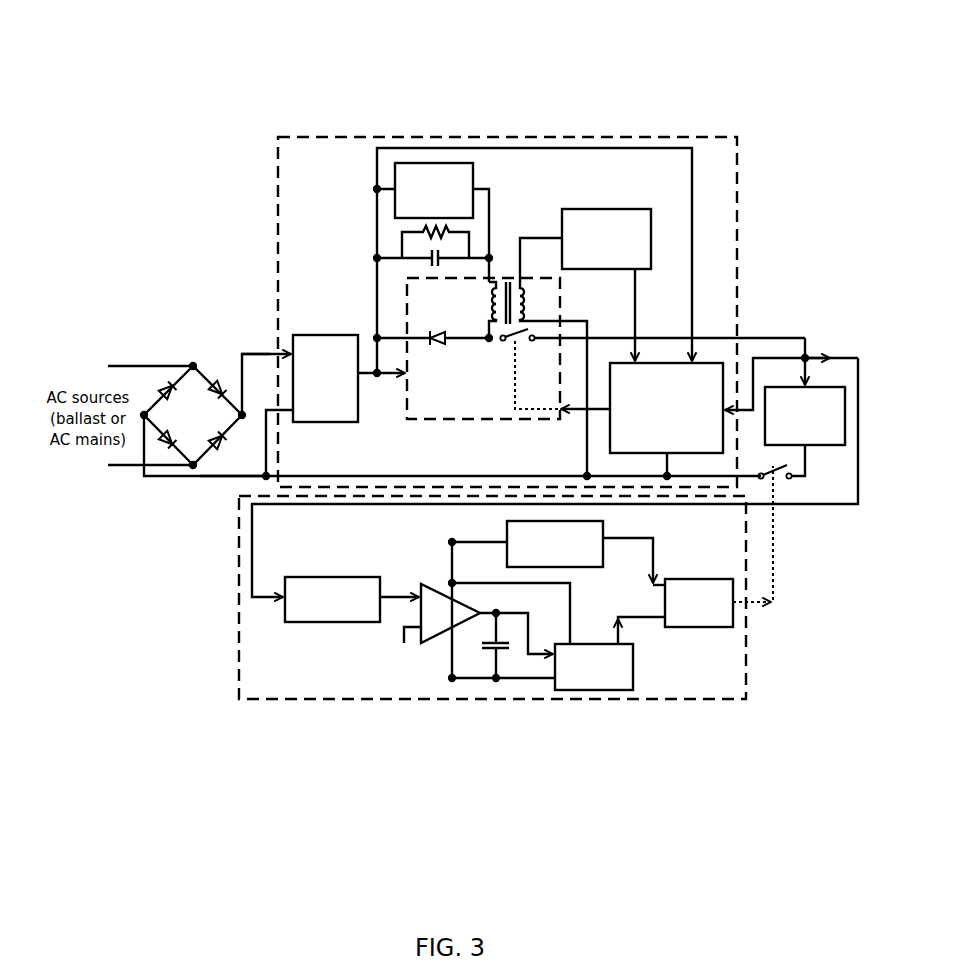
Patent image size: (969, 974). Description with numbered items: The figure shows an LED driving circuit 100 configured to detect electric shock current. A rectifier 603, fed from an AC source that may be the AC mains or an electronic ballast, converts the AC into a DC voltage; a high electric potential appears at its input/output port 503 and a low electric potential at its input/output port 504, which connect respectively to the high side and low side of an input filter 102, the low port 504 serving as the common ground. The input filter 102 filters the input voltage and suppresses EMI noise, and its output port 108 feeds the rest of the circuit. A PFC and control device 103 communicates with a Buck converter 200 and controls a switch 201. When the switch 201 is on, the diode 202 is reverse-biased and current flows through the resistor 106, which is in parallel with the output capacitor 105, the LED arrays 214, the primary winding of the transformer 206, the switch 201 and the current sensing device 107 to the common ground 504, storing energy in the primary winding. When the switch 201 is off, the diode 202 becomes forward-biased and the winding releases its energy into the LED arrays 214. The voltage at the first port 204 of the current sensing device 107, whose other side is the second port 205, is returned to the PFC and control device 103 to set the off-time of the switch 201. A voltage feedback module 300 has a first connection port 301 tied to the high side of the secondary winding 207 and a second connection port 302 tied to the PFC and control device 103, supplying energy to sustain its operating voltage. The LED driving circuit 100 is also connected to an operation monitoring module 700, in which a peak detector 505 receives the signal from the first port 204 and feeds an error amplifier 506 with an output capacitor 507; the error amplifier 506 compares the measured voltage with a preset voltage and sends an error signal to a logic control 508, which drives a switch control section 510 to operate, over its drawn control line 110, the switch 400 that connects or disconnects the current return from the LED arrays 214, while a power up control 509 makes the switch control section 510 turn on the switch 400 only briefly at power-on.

The LED driving circuit 100 is at (459, 135).
The input filter 102 is at (319, 334).
The PFC and control device 103 is at (719, 361).
The output capacitor 105 is at (422, 253).
The resistor 106 is at (448, 241).
The current sensing device 107 is at (823, 448).
The output port 108 is at (375, 335).
The switch control signal line 110 is at (757, 607).
The Buck converter 200 is at (401, 421).
The switch 201 is at (512, 343).
The diode 202 is at (440, 350).
The first port 204 is at (813, 350).
The second port 205 is at (792, 482).
The transformer 206 is at (510, 280).
The secondary winding 207 is at (533, 238).
The LED arrays 214 is at (412, 162).
The voltage feedback module 300 is at (611, 209).
The first connection port 301 is at (520, 297).
The second connection port 302 is at (638, 303).
The switch 400 is at (778, 482).
The input/output port 503 is at (257, 348).
The input/output port 504 is at (240, 481).
The peak detector 505 is at (313, 624).
The error amplifier 506 is at (435, 640).
The output capacitor 507 is at (505, 658).
The logic control 508 is at (613, 691).
The power up control 509 is at (590, 568).
The switch control section 510 is at (717, 628).
The rectifier 603 is at (185, 358).
The operation monitoring module 700 is at (236, 656).